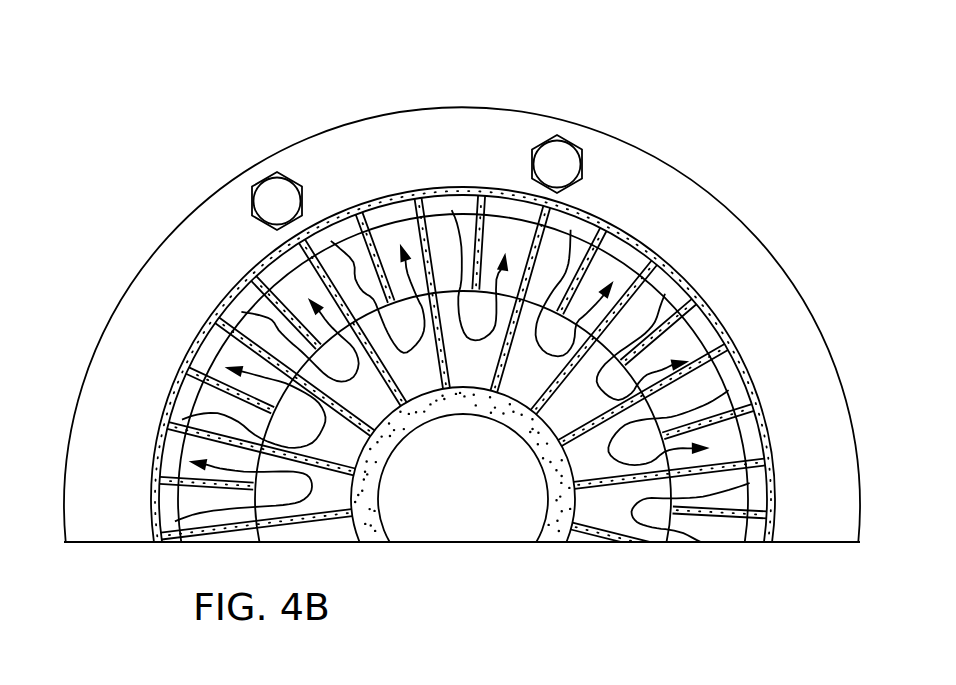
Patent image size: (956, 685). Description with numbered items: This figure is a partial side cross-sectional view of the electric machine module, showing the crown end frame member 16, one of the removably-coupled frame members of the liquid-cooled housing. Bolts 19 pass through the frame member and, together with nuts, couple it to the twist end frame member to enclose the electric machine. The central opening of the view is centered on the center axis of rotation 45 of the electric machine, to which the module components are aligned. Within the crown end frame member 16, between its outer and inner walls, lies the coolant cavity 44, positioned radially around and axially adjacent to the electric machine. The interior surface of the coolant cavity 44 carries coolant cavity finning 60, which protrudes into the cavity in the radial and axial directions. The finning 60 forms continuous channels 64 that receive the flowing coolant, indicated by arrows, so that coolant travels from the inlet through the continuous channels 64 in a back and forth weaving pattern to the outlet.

The crown end frame member 16 is at (287, 41).
The bolt 19 is at (268, 193).
The coolant cavity 44 is at (595, 312).
The center axis of rotation 45 is at (462, 513).
The coolant cavity finning 60 is at (477, 230).
The continuous channel 64 is at (322, 378).